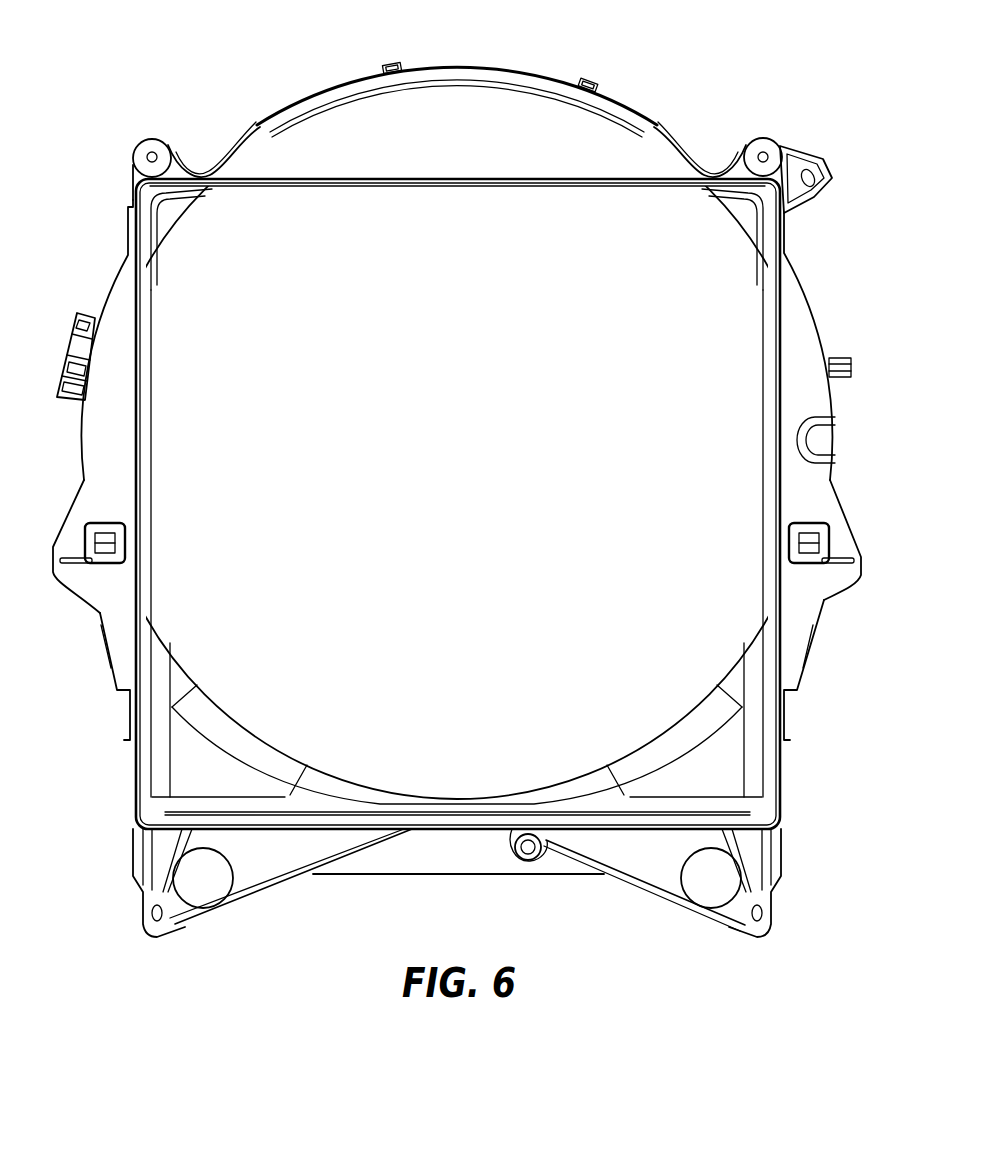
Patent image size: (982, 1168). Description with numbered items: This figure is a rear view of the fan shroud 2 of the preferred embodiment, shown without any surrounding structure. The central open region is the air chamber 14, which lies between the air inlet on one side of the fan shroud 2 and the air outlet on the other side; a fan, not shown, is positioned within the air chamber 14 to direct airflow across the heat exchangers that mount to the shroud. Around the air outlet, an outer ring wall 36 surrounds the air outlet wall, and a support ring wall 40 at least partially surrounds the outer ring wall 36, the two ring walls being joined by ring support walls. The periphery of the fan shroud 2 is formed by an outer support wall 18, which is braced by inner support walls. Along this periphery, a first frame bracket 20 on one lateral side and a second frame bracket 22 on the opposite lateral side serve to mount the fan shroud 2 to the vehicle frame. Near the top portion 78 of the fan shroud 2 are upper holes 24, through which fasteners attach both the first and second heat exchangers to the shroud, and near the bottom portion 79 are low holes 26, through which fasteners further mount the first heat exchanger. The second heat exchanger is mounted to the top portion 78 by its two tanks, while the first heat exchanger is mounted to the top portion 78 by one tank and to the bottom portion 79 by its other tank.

The fan shroud 2 is at (663, 70).
The air chamber 14 is at (703, 397).
The outer support wall 18 is at (128, 760).
The first frame bracket 20 is at (73, 547).
The second frame bracket 22 is at (841, 547).
The upper holes 24 is at (150, 152).
The low holes 26 is at (152, 915).
The outer ring wall 36 is at (509, 70).
The support ring wall 40 is at (806, 298).
The top portion 78 is at (292, 62).
The bottom portion 79 is at (512, 889).